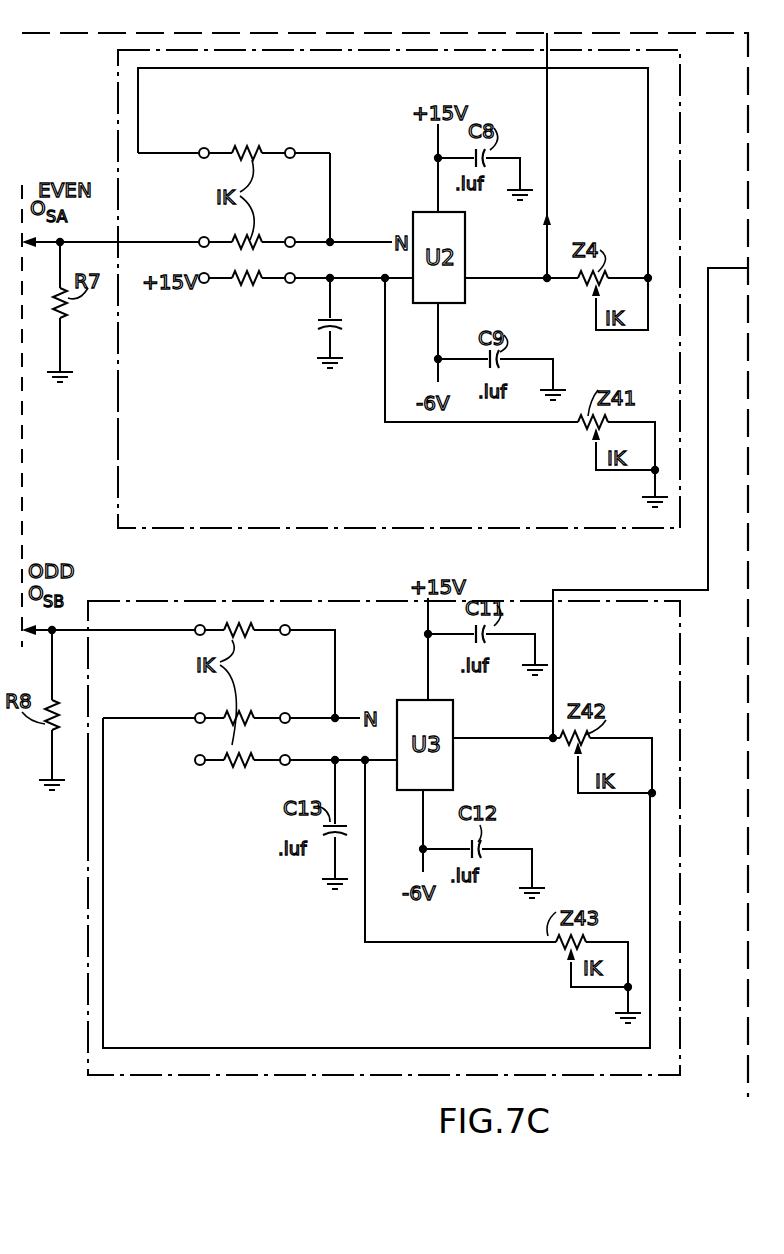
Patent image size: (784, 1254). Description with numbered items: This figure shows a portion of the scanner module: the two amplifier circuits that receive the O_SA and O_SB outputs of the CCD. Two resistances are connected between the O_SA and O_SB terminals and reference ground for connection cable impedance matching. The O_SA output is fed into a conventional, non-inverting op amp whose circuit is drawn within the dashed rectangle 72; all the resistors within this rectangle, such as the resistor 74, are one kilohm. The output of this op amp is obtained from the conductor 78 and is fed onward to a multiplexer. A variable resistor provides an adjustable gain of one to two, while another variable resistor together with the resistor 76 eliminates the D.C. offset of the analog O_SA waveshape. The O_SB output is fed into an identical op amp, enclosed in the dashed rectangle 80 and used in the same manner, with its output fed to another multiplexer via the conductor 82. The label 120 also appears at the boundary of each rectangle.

The dashed rectangle 72 is at (688, 178).
The resistor 74 is at (244, 150).
The resistor 76 is at (249, 272).
The conductor 78 is at (550, 118).
The dashed rectangle 80 is at (682, 736).
The conductor 82 is at (668, 590).
The output line 120 is at (130, 426).